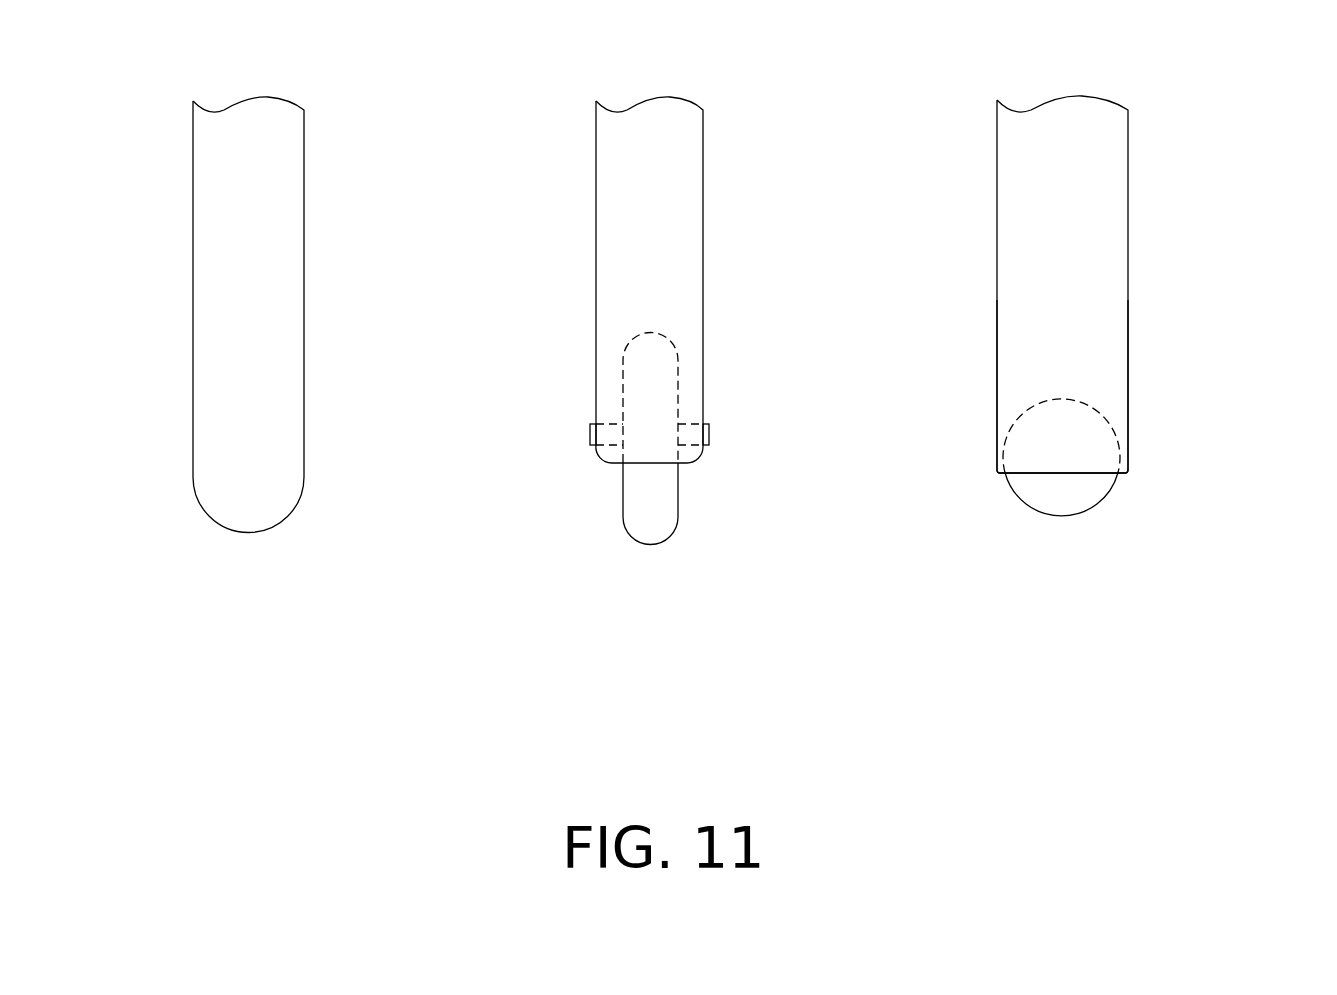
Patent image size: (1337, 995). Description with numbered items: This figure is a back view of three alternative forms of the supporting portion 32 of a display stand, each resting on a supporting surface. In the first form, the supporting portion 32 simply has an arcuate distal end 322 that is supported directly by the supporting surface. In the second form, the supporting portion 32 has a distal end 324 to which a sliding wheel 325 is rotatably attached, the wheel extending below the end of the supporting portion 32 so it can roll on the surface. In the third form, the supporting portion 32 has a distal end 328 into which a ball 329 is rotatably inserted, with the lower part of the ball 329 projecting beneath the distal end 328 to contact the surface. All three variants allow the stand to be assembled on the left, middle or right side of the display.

The supporting portion 32 is at (264, 207).
The arcuate distal end 322 is at (272, 489).
The distal end 324 is at (687, 359).
The sliding wheel 325 is at (661, 524).
The distal end 328 is at (1103, 373).
The ball 329 is at (1067, 493).